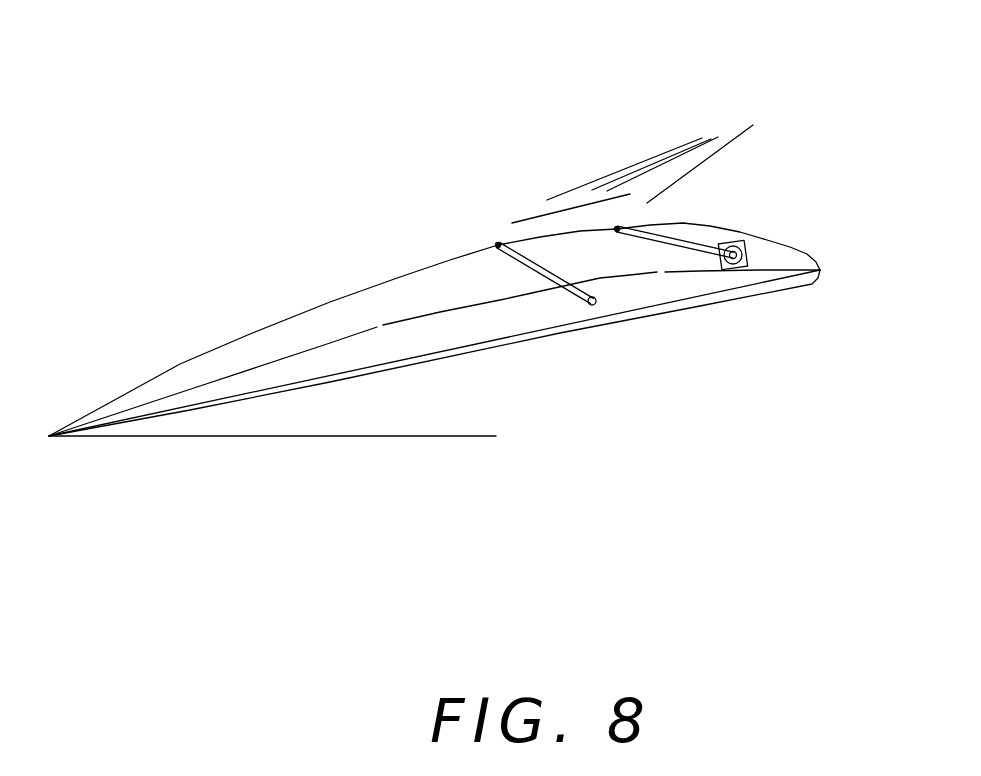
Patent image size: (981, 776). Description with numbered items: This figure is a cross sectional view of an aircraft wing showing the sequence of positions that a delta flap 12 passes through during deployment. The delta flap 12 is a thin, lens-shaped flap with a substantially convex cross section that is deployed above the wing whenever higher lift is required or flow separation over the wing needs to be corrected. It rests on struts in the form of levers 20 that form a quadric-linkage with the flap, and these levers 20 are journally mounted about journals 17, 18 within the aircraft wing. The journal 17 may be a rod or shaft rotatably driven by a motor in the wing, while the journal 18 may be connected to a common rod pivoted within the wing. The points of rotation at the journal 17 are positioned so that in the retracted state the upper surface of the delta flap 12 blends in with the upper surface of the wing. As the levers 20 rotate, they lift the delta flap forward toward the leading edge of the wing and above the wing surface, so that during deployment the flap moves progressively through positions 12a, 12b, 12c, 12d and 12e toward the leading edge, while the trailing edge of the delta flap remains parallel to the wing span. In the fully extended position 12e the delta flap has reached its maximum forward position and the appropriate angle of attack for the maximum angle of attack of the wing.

The delta flap 12 is at (513, 240).
The delta flap position 12a is at (520, 205).
The delta flap position 12b is at (553, 190).
The delta flap position 12c is at (693, 142).
The delta flap position 12d is at (717, 137).
The delta flap position 12e is at (742, 126).
The journal 17 is at (727, 268).
The journal 18 is at (605, 308).
The lever 20 is at (703, 236).